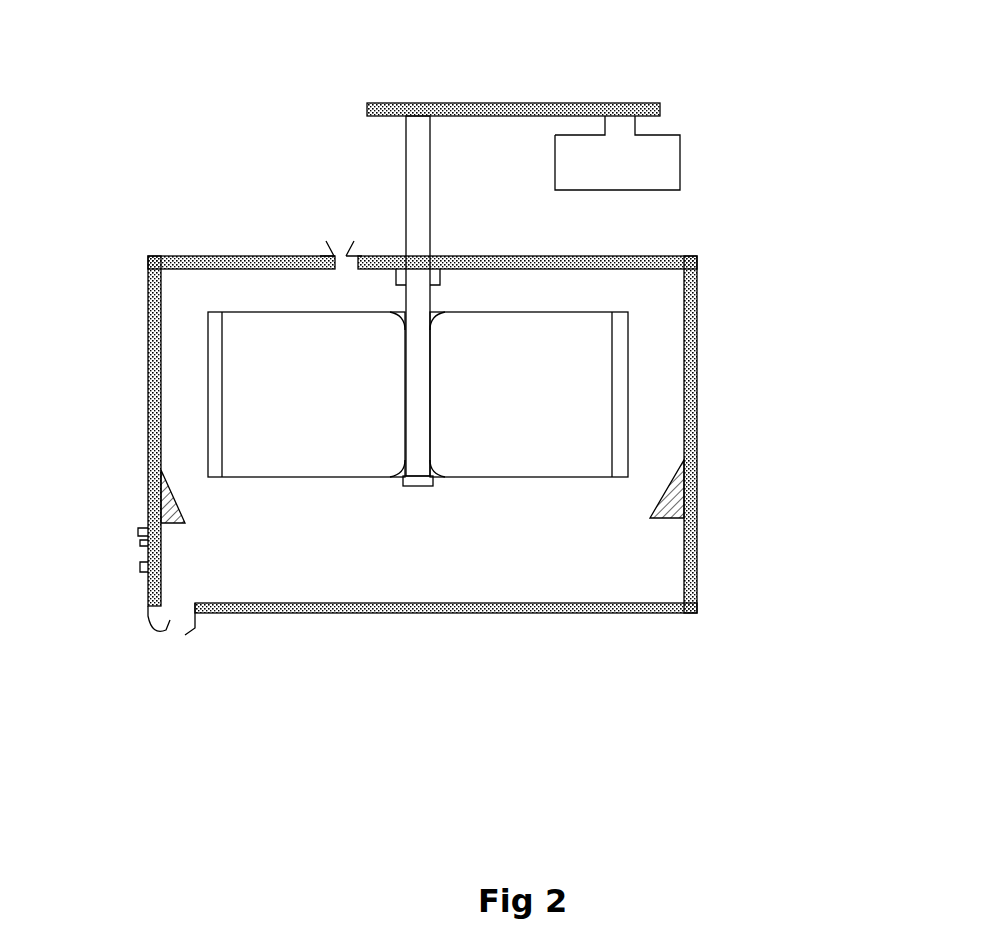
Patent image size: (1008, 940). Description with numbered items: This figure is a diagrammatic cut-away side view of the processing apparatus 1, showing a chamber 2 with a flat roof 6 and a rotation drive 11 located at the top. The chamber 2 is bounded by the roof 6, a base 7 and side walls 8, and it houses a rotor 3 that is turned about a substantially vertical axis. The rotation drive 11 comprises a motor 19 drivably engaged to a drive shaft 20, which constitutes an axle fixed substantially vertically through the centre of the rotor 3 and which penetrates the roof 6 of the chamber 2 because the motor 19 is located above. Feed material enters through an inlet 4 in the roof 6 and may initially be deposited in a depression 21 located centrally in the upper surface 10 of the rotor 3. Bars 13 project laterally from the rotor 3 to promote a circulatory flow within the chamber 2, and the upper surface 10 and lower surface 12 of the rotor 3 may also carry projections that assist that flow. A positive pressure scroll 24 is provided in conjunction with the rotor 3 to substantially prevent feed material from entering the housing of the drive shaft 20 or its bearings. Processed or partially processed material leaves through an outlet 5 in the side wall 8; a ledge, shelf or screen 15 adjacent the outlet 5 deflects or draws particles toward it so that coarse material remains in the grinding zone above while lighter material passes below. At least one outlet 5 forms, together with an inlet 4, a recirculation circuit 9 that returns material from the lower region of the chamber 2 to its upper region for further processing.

The processing apparatus 1 is at (786, 232).
The chamber 2 is at (406, 467).
The rotor 3 is at (421, 372).
The inlet 4 is at (334, 244).
The outlet 5 is at (182, 626).
The roof 6 is at (475, 264).
The base 7 is at (487, 614).
The side wall 8 is at (148, 410).
The recirculation circuit 9 is at (140, 536).
The upper surface 10 is at (275, 313).
The rotation drive 11 is at (470, 82).
The lower surface 12 is at (272, 480).
The bar 13 is at (212, 392).
The ledge, shelf or screen 15 is at (148, 487).
The motor 19 is at (680, 150).
The drive shaft 20 is at (424, 187).
The depression 21 is at (565, 112).
The positive pressure scroll 24 is at (394, 254).